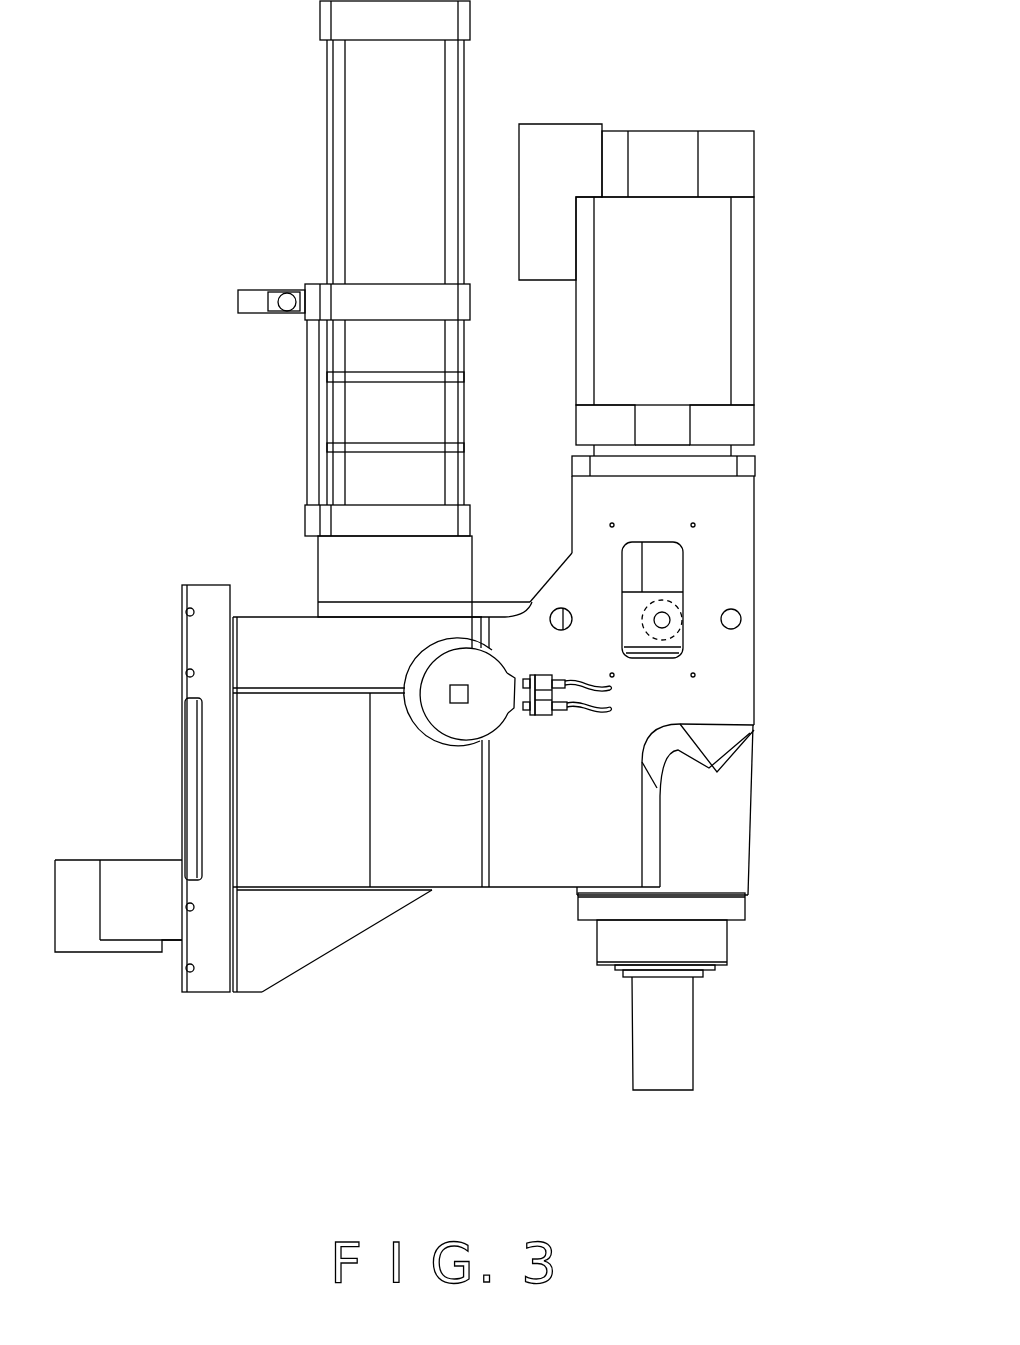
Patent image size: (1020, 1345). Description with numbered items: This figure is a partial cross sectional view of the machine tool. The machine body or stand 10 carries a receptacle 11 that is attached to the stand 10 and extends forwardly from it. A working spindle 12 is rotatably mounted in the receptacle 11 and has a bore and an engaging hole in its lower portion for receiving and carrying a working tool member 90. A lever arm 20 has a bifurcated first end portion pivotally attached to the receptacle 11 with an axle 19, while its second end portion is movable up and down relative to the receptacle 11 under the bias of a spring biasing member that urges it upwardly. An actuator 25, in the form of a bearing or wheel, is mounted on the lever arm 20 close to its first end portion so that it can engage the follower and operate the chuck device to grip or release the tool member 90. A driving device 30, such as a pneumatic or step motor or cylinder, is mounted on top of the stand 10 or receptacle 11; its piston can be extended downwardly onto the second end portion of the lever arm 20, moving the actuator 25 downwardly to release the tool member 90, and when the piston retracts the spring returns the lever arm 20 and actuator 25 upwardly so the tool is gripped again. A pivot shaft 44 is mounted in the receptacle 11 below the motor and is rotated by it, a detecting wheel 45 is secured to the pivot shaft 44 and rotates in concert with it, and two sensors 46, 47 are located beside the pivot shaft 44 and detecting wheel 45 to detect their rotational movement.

The stand 10 is at (193, 953).
The receptacle 11 is at (293, 925).
The working spindle 12 is at (720, 948).
The axle 19 is at (742, 619).
The lever arm 20 is at (497, 597).
The actuator 25 is at (672, 605).
The driving device 30 is at (358, 112).
The pivot shaft 44 is at (462, 694).
The detecting wheel 45 is at (490, 717).
The sensor 46 is at (553, 678).
The sensor 47 is at (553, 717).
The tool member 90 is at (642, 1068).